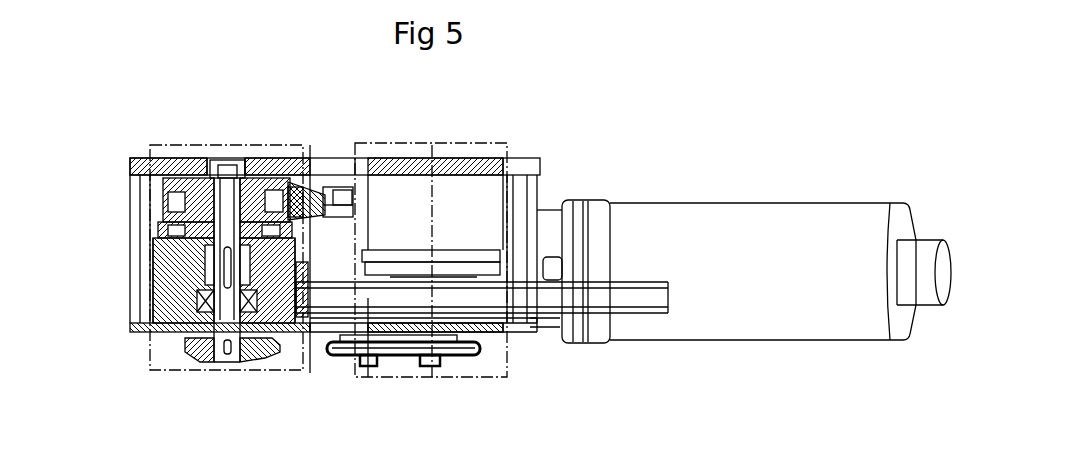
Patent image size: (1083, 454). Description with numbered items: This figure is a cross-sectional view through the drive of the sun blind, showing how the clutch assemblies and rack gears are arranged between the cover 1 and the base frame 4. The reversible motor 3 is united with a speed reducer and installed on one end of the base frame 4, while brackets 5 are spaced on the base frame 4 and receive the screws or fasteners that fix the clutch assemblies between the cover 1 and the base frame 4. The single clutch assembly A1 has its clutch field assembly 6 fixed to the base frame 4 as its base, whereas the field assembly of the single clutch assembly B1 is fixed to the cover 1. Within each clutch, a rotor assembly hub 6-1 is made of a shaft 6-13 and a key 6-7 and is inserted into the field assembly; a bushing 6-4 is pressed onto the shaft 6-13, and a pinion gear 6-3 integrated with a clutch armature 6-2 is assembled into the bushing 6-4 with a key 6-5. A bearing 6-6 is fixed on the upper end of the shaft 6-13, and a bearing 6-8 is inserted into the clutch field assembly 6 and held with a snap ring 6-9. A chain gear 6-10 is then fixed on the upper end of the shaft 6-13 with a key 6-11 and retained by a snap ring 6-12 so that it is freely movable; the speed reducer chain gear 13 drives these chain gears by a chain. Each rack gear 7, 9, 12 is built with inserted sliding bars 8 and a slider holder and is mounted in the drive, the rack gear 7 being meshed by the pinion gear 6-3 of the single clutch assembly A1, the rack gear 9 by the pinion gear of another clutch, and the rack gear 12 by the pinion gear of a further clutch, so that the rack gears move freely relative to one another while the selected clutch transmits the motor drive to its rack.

The cover 1 is at (333, 160).
The reversible motor 3 is at (675, 215).
The base frame 4 is at (140, 333).
The bracket 5 is at (132, 185).
The clutch field assembly 6 is at (155, 305).
The rotor assembly hub 6-1 is at (160, 258).
The clutch armature 6-2 is at (160, 230).
The pinion gear 6-3 is at (168, 180).
The bushing 6-4 is at (165, 200).
The key 6-5 is at (300, 188).
The bearing 6-6 is at (252, 185).
The key 6-7 is at (303, 280).
The bearing 6-8 is at (192, 335).
The snap ring 6-9 is at (260, 352).
The chain gear 6-10 is at (198, 332).
The key 6-11 is at (226, 357).
The snap ring 6-12 is at (250, 345).
The shaft 6-13 is at (222, 170).
The rack gear 7 is at (310, 158).
The sliding bar 8 is at (335, 212).
The rack gear 9 is at (335, 198).
The rack gear 12 is at (628, 300).
The speed reducer chain gear 13 is at (328, 355).
The single clutch assembly A1 is at (150, 148).
The single clutch assembly B1 is at (492, 143).